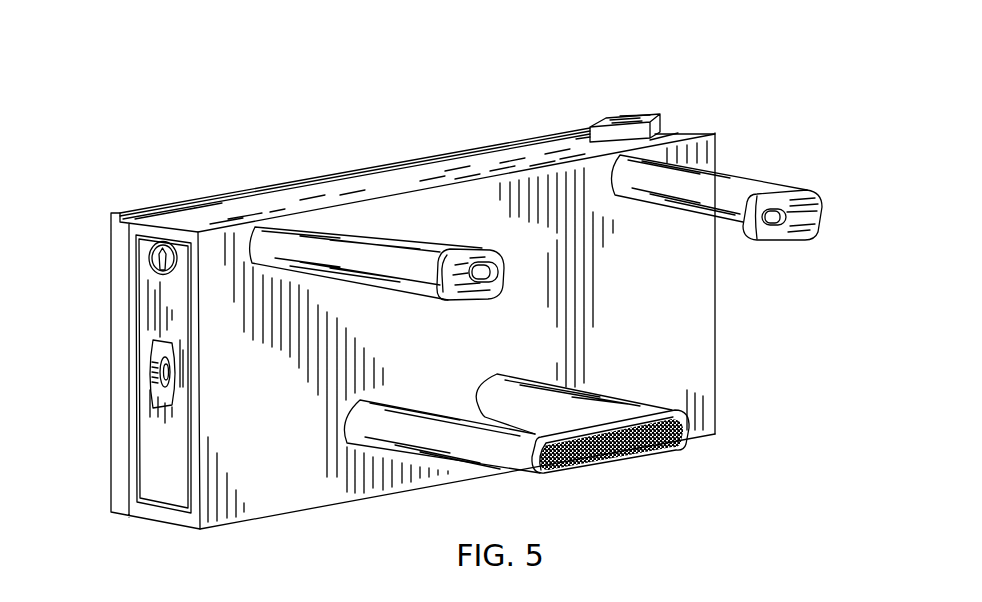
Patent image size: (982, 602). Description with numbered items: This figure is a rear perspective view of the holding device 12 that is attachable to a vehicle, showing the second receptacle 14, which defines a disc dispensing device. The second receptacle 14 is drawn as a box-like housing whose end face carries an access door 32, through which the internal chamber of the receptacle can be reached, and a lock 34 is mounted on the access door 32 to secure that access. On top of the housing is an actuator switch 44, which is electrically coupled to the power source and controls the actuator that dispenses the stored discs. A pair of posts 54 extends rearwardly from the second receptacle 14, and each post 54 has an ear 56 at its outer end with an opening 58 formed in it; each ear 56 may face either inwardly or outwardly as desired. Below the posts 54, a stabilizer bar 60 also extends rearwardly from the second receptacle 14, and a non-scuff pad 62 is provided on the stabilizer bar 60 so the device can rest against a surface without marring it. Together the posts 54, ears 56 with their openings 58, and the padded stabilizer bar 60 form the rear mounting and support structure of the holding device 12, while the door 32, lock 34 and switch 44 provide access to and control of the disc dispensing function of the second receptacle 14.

The carrying case housing 12 is at (107, 397).
The second receptacle 14 is at (220, 527).
The access door 32 is at (165, 500).
The lock 34 is at (149, 258).
The actuator switch 44 is at (650, 122).
The post 54 is at (342, 252).
The ear 56 is at (487, 252).
The opening 58 is at (480, 267).
The stabilizer bar 60 is at (624, 398).
The non-scuff pad 62 is at (659, 448).